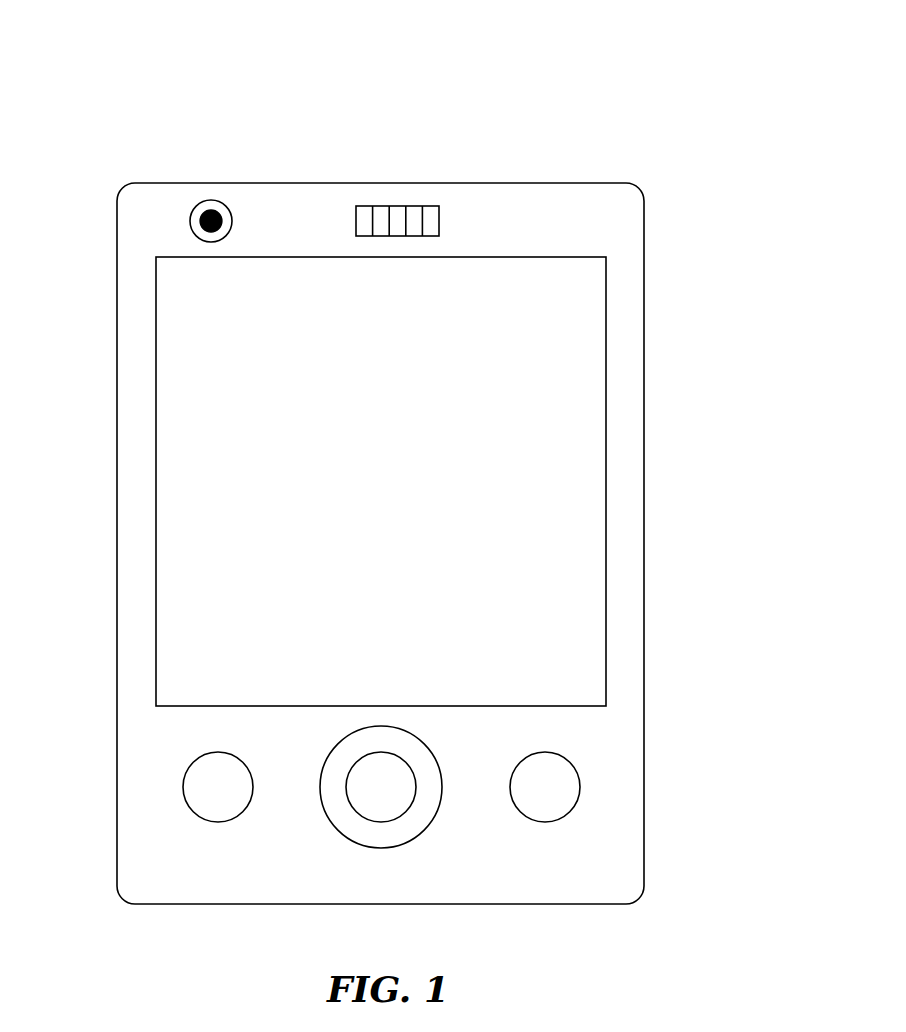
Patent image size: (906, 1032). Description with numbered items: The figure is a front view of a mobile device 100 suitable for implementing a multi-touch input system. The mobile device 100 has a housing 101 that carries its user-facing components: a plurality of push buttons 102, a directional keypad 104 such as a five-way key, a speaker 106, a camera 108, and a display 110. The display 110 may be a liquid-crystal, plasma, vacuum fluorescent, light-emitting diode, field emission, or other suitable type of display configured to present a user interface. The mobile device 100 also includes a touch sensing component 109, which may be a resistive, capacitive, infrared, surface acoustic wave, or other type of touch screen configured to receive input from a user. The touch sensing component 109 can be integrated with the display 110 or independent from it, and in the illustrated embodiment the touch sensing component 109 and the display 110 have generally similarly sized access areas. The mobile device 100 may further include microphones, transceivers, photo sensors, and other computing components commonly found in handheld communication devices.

The mobile device 100 is at (643, 127).
The housing 101 is at (624, 727).
The push buttons 102 is at (183, 787).
The directional keypad 104 is at (435, 815).
The speaker 106 is at (398, 206).
The camera 108 is at (212, 201).
The touch sensing component 109 is at (606, 484).
The display 110 is at (578, 393).